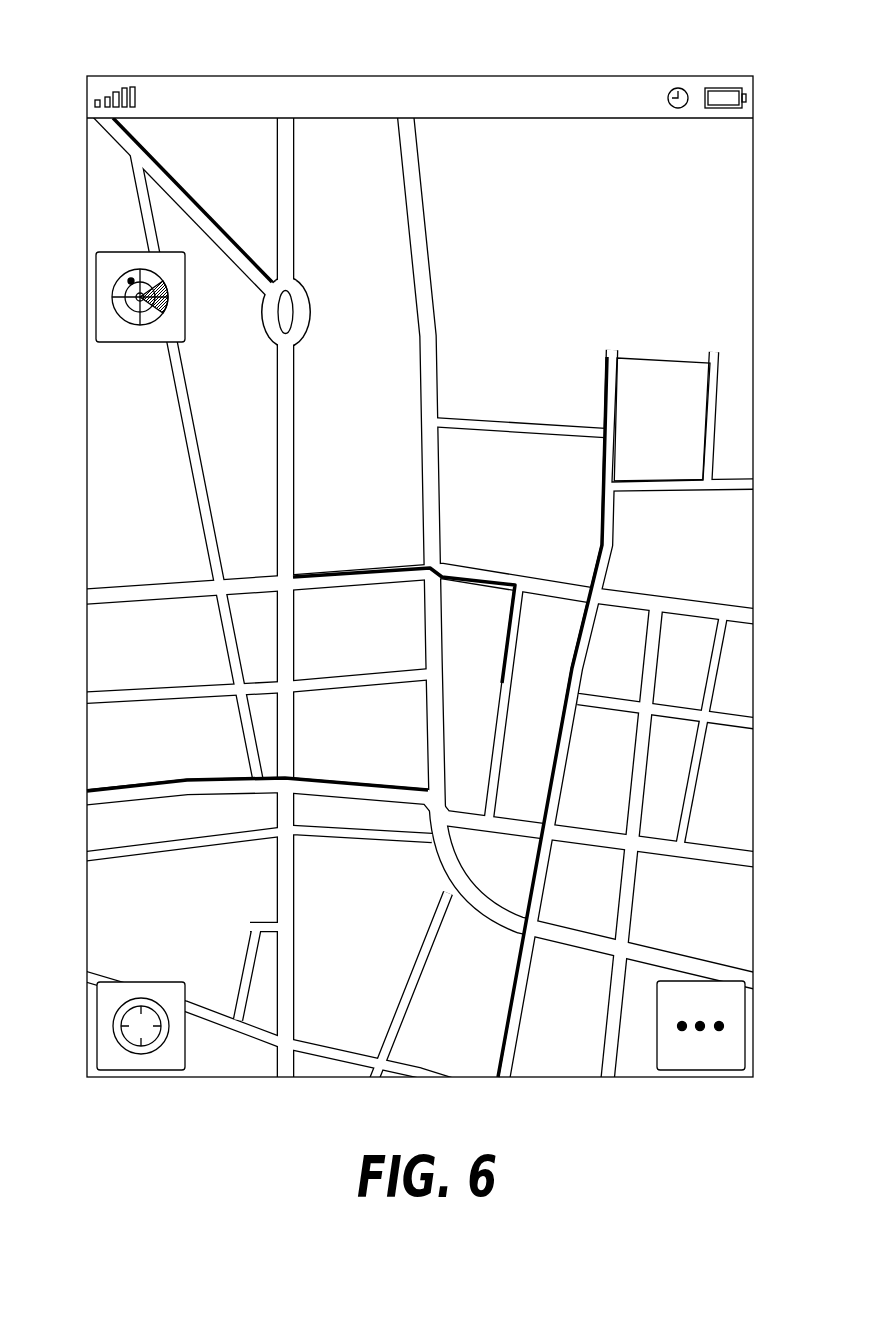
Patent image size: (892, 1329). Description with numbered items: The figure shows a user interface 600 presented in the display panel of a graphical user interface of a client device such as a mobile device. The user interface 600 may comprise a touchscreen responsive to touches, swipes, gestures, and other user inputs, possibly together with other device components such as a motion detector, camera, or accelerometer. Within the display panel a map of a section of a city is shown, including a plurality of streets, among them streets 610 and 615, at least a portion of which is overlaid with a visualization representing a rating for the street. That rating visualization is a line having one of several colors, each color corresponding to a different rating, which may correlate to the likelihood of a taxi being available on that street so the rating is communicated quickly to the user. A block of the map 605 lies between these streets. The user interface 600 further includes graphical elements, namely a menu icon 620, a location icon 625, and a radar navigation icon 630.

The user interface 600 is at (87, 40).
The map 605 is at (712, 444).
The street 610 is at (607, 380).
The street 615 is at (110, 792).
The menu icon 620 is at (688, 982).
The location icon 625 is at (135, 982).
The radar navigation icon 630 is at (112, 252).